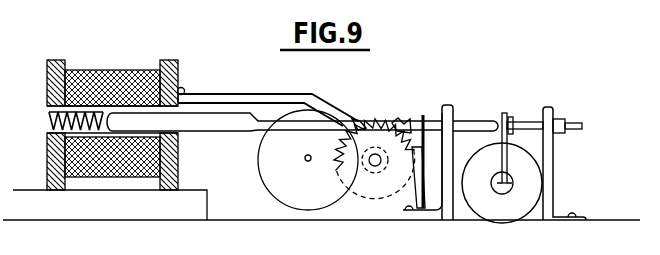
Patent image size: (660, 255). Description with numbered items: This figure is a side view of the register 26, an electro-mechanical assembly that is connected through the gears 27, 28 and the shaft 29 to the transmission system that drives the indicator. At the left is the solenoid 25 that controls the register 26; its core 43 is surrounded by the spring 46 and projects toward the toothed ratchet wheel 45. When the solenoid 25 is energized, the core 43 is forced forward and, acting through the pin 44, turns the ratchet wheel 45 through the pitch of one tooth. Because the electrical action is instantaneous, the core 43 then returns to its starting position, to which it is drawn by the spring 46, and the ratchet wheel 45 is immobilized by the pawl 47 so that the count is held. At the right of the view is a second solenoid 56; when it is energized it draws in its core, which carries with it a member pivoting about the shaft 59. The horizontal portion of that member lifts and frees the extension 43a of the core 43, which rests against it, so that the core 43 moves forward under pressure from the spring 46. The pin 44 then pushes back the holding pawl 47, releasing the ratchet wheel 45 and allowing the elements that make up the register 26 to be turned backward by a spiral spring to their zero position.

The solenoid 25 is at (137, 82).
The register 26 is at (221, 221).
The gear 27 is at (381, 150).
The gear 28 is at (298, 117).
The shaft 29 is at (308, 155).
The core 43 is at (232, 121).
The extension 43a is at (470, 128).
The pin 44 is at (359, 119).
The ratchet wheel 45 is at (406, 124).
The spring 46 is at (92, 110).
The pawl 47 is at (420, 147).
The solenoid 56 is at (525, 188).
The shaft 59 is at (525, 122).